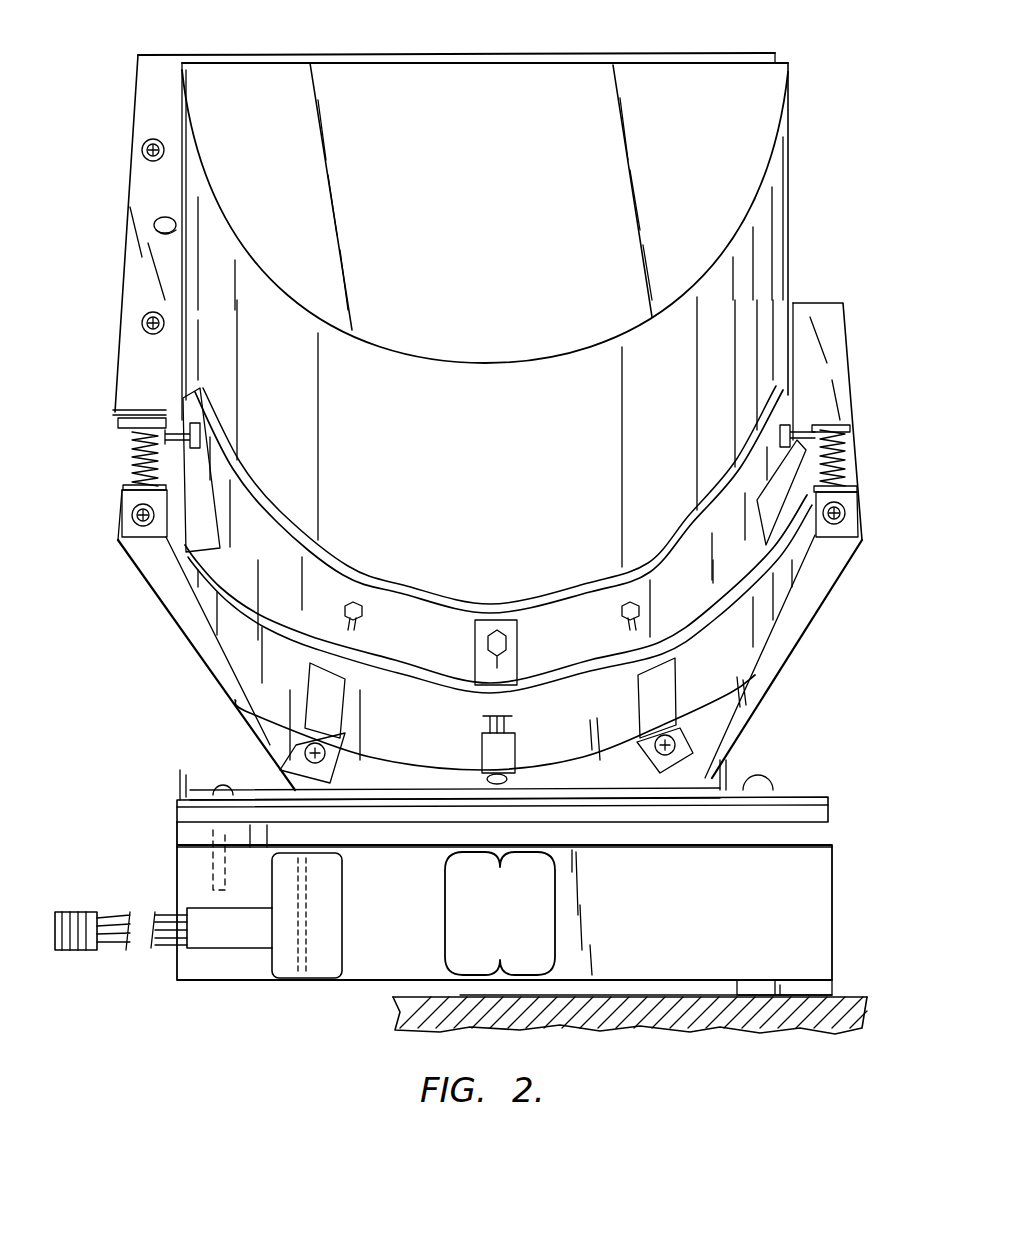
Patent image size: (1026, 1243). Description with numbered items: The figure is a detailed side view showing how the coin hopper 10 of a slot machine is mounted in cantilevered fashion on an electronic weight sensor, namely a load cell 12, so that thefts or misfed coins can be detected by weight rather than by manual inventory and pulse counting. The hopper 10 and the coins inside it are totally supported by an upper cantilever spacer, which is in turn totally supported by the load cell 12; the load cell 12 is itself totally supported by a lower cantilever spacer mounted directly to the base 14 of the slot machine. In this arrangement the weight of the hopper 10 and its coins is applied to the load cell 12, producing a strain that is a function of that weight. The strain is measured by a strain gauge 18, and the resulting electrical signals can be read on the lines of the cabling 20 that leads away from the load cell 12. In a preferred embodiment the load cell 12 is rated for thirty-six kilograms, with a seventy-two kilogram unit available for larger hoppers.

The hopper 10 is at (637, 63).
The load cell 12 is at (822, 866).
The base 14 is at (828, 1020).
The strain gauge 18 is at (292, 975).
The cabling 20 is at (72, 950).